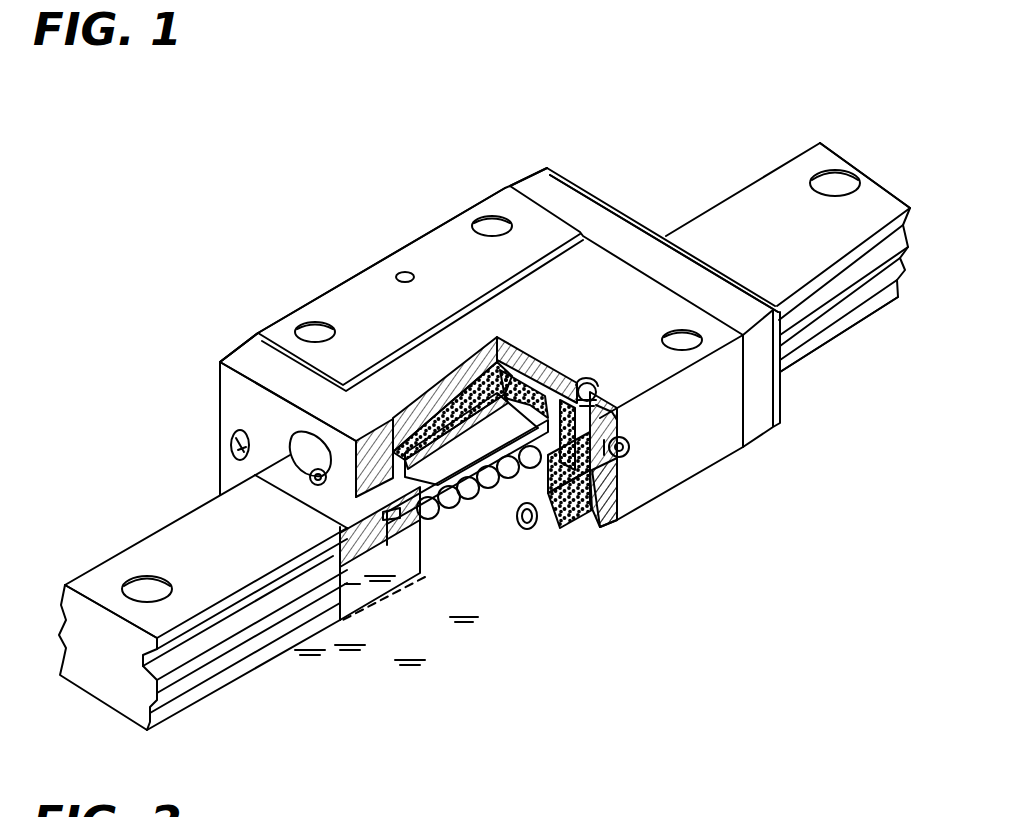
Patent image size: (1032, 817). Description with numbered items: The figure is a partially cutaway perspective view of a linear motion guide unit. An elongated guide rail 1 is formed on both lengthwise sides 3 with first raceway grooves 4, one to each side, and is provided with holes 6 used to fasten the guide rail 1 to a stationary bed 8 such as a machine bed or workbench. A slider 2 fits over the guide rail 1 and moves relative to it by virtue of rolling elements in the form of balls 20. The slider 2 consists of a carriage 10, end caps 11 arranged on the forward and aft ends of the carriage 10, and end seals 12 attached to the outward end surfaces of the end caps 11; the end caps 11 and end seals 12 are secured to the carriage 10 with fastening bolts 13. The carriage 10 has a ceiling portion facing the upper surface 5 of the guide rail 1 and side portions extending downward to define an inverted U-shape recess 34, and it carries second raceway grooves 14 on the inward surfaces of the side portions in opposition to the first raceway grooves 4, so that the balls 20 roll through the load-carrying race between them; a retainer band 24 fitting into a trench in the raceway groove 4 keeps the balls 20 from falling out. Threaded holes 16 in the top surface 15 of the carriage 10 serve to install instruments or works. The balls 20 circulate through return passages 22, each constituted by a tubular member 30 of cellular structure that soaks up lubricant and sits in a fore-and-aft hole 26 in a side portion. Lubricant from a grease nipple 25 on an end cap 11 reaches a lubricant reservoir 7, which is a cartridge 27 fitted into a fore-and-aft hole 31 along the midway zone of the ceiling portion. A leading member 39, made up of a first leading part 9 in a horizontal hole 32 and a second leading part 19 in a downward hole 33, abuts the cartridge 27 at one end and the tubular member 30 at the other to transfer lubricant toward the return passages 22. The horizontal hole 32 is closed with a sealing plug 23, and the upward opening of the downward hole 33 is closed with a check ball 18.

The guide rail 1 is at (298, 656).
The slider 2 is at (517, 180).
The lengthwise sides 3 is at (187, 683).
The first raceway grooves 4 is at (218, 635).
The upper surface 5 is at (190, 540).
The holes 6 is at (138, 585).
The lubricant reservoir 7 is at (357, 314).
The stationary bed 8 is at (446, 636).
The first leading part 9 is at (565, 380).
The carriage 10 is at (430, 268).
The end caps 11 is at (265, 362).
The end seals 12 is at (245, 385).
The fastening bolts 13 is at (233, 441).
The second raceway grooves 14 is at (565, 482).
The top surface 15 is at (330, 302).
The threaded holes 16 is at (310, 330).
The check ball 18 is at (403, 273).
The second leading part 19 is at (620, 420).
The balls 20 is at (487, 492).
The return passages 22 is at (530, 522).
The sealing plug 23 is at (628, 450).
The retainer band 24 is at (398, 515).
The grease nipple 25 is at (293, 457).
The fore-and-aft hole 26 is at (583, 520).
The cartridge 27 is at (480, 358).
The tubular member 30 is at (563, 525).
The fore-and-aft hole 31 is at (465, 358).
The horizontal hole 32 is at (525, 372).
The downward hole 33 is at (623, 488).
The inverted U-shape recess 34 is at (503, 490).
The leading member 39 is at (582, 387).